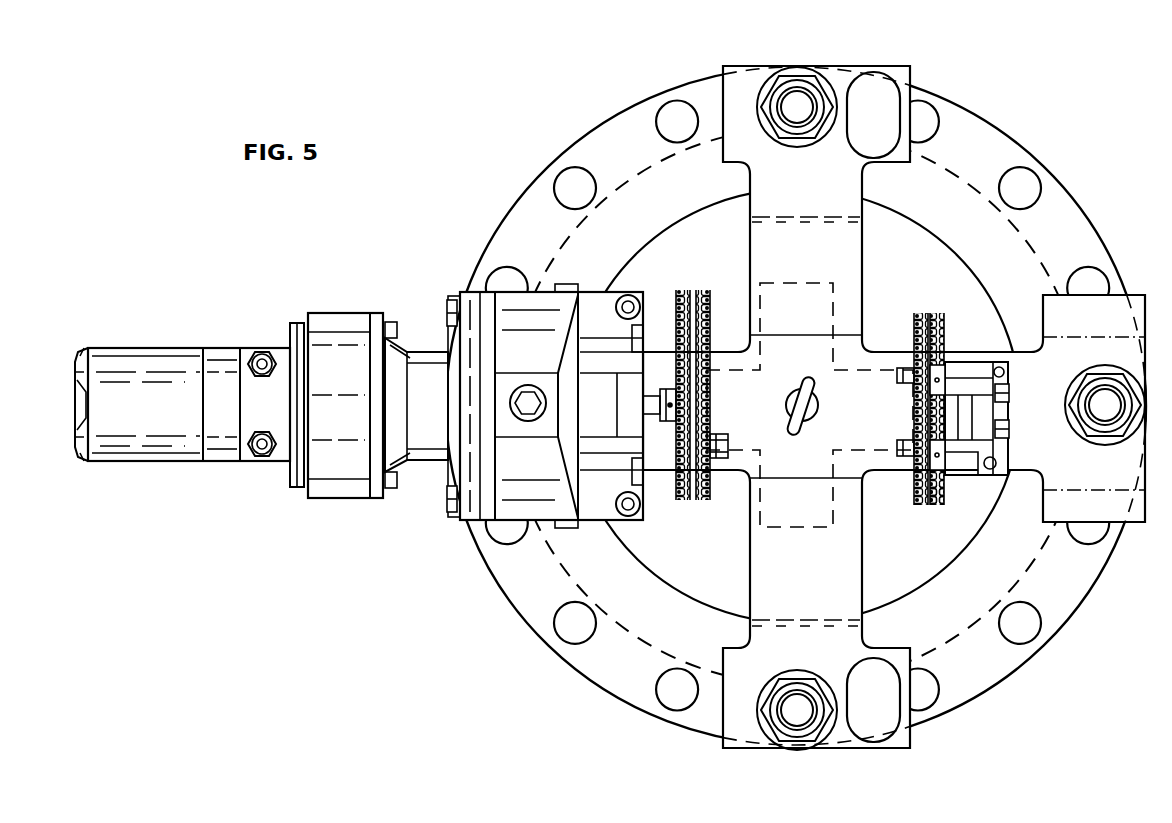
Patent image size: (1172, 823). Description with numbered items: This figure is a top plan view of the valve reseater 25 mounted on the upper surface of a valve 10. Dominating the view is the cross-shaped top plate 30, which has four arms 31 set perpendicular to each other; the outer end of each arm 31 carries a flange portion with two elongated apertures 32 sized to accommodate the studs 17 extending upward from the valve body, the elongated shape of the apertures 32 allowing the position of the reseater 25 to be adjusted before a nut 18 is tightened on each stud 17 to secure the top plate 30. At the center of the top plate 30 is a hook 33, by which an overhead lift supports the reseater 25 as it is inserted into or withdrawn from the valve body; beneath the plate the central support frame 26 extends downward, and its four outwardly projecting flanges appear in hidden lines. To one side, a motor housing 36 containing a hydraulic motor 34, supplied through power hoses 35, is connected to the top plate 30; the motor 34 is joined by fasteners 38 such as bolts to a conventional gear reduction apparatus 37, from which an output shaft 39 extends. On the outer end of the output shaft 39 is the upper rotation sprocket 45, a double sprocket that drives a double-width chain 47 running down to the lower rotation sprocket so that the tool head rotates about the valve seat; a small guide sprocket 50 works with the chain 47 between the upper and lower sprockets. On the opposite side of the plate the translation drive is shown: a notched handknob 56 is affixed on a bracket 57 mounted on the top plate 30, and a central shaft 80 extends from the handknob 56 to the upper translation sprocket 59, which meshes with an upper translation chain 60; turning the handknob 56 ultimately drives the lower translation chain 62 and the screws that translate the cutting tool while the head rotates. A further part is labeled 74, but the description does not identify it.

The valve 10 is at (1053, 123).
The stud 17 is at (801, 104).
The nut 18 is at (782, 90).
The valve reseater 25 is at (411, 294).
The central support frame 26 is at (818, 321).
The top plate 30 is at (1135, 296).
The arm 31 is at (753, 243).
The aperture 32 is at (882, 101).
The hook 33 is at (811, 393).
The motor 34 is at (127, 461).
The power hose 35 is at (260, 354).
The motor housing 36 is at (338, 483).
The gear reduction apparatus 37 is at (533, 292).
The fastener 38 is at (452, 333).
The output shaft 39 is at (652, 395).
The upper rotation sprocket 45 is at (703, 291).
The double-width chain 47 is at (708, 407).
The guide sprocket 50 is at (716, 432).
The handknob 56 is at (1009, 430).
The bracket 57 is at (1009, 392).
The upper translation sprocket 59 is at (920, 426).
The upper translation chain 60 is at (917, 490).
The lower translation chain 62 is at (937, 491).
The cap screw 74 is at (634, 298).
The central shaft 80 is at (916, 410).